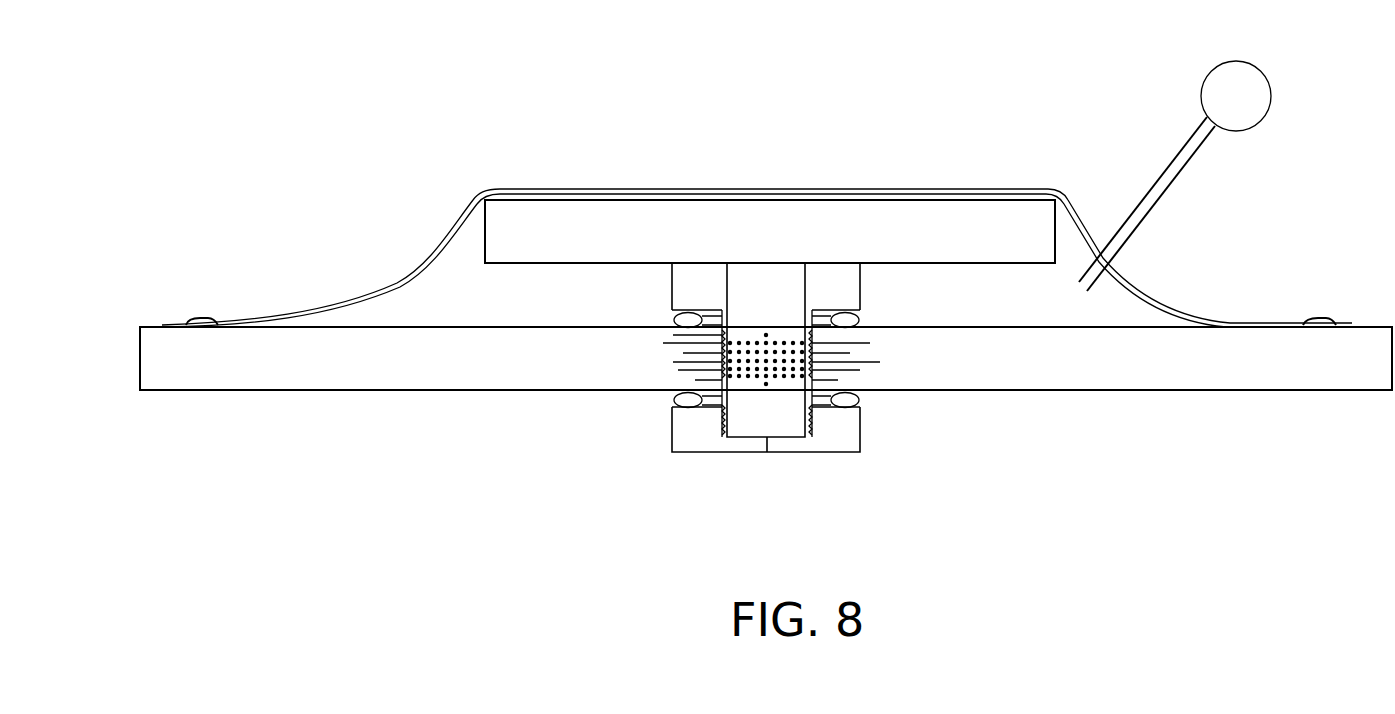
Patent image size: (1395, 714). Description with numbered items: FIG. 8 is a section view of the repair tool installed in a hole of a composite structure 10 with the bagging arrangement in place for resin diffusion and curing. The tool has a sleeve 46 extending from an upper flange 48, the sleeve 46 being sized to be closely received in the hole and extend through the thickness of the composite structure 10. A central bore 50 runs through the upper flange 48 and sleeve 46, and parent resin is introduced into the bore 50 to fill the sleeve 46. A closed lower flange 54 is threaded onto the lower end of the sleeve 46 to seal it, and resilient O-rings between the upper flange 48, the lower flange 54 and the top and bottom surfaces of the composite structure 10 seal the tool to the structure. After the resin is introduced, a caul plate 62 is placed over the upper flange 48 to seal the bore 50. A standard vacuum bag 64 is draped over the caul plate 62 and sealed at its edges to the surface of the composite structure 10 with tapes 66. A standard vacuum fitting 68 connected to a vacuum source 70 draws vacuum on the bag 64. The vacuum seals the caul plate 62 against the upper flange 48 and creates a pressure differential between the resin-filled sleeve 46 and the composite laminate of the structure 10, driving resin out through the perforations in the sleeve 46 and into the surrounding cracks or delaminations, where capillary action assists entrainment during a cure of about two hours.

The composite structure 10 is at (1262, 367).
The sleeve 46 is at (731, 323).
The upper flange 48 is at (845, 290).
The central bore 50 is at (748, 283).
The lower flange 54 is at (837, 430).
The caul plate 62 is at (996, 228).
The vacuum bag 64 is at (1160, 302).
The tapes 66 is at (178, 322).
The vacuum fitting 68 is at (1160, 198).
The vacuum source 70 is at (1262, 82).